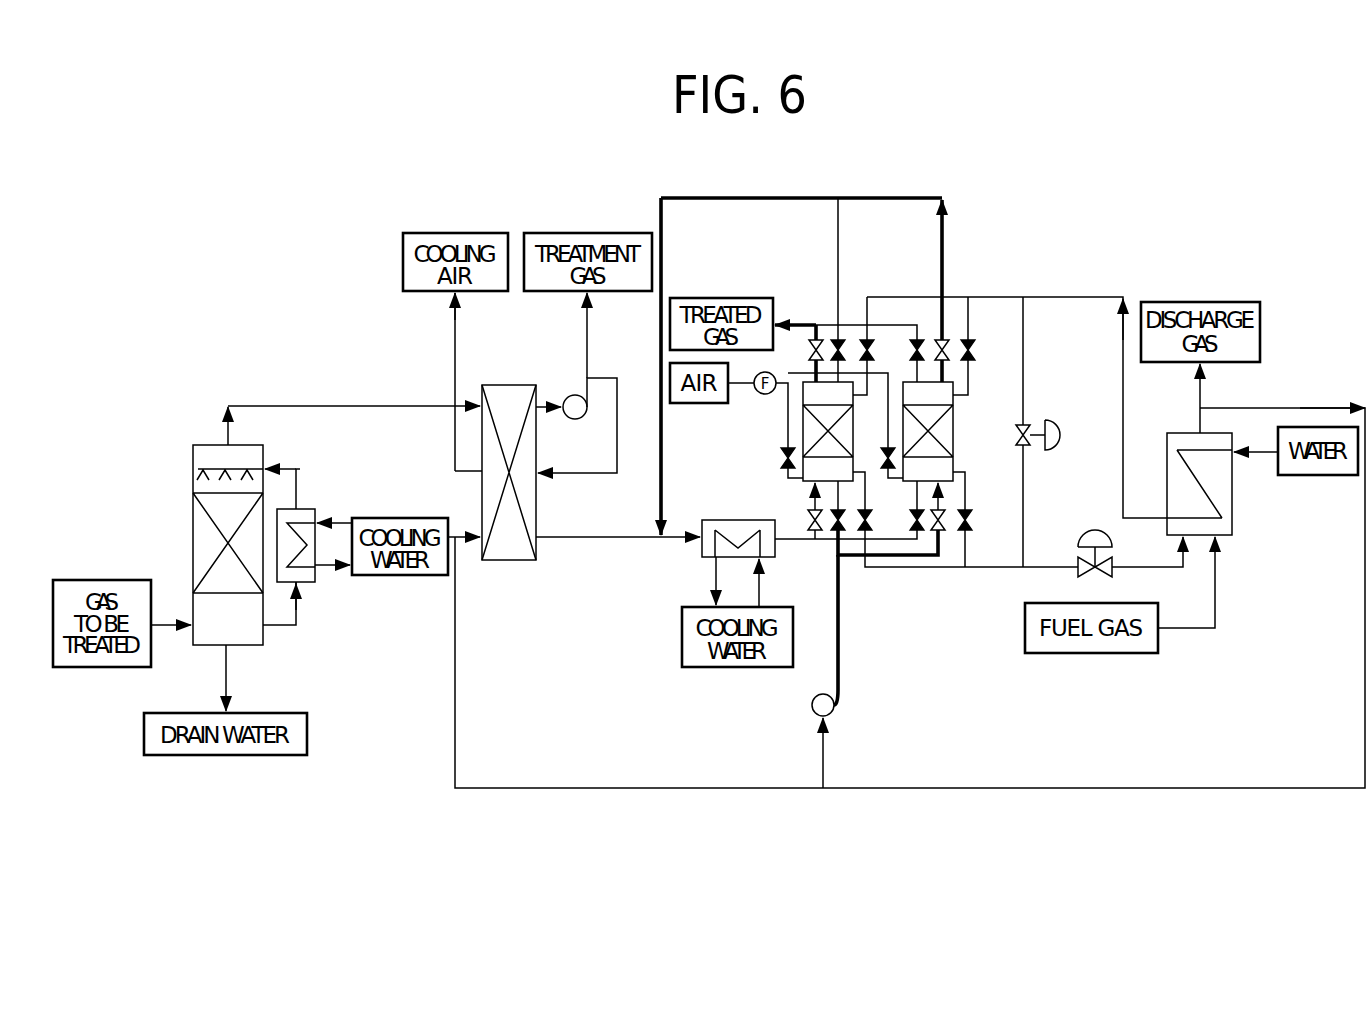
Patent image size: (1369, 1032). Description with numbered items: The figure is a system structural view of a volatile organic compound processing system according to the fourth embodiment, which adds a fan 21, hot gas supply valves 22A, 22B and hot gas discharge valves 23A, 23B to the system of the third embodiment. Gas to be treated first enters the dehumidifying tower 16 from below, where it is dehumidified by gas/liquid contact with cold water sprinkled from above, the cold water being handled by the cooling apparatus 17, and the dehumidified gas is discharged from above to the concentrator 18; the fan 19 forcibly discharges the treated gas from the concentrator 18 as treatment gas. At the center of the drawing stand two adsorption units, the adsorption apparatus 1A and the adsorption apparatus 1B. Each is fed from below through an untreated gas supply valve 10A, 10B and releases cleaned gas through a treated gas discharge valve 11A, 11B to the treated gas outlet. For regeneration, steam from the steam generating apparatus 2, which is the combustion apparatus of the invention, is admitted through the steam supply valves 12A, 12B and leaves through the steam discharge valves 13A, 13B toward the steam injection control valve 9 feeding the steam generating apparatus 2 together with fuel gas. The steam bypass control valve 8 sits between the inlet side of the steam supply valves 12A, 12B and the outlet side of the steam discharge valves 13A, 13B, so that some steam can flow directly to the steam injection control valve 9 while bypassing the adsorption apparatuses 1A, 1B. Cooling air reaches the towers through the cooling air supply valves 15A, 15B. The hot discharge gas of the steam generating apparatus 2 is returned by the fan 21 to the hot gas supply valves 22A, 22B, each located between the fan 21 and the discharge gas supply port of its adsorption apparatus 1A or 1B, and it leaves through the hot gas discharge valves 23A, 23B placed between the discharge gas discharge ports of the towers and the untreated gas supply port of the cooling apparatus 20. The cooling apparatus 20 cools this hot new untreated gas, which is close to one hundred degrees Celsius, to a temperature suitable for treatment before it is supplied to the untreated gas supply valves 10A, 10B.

The adsorption unit 1A is at (803, 427).
The adsorption unit 1B is at (955, 428).
The steam generating apparatus 2 is at (1232, 505).
The steam bypass control valve 8 is at (1060, 435).
The steam injection control valve 9 is at (1095, 535).
The untreated gas supply valve 10A is at (809, 520).
The untreated gas supply valve 10B is at (921, 532).
The treated gas discharge valve 11A is at (812, 340).
The treated gas discharge valve 11B is at (912, 340).
The steam supply valve 12A is at (862, 340).
The steam supply valve 12B is at (975, 348).
The steam discharge valve 13A is at (861, 529).
The steam discharge valve 13B is at (975, 519).
The cooling air supply valve 15A is at (783, 462).
The cooling air supply valve 15B is at (884, 470).
The dehumidifying tower 16 is at (192, 539).
The cooling apparatus 17 is at (303, 584).
The concentrator 18 is at (511, 561).
The fan 19 is at (569, 396).
The cooling apparatus 20 is at (707, 560).
The fan 21 is at (812, 705).
The hot gas supply valve 22A is at (834, 529).
The hot gas supply valve 22B is at (943, 509).
The hot gas discharge valve 23A is at (833, 340).
The hot gas discharge valve 23B is at (948, 340).